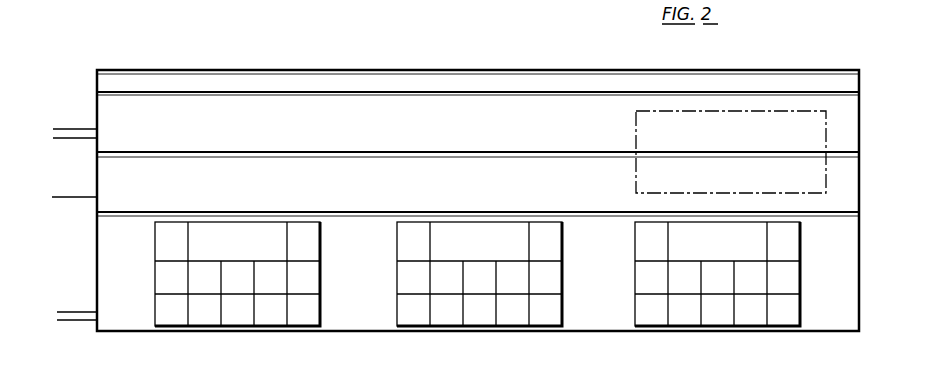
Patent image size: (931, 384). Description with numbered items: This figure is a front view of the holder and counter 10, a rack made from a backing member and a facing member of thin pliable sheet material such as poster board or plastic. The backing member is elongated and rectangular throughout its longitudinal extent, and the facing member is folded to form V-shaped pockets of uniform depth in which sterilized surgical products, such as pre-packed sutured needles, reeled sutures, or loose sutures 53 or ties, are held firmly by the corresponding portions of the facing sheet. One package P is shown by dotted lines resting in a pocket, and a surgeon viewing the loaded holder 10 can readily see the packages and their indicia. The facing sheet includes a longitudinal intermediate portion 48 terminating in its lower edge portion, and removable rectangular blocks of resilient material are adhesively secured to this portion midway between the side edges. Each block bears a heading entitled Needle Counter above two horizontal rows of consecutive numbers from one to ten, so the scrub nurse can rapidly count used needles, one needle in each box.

The holder and counter 10 is at (497, 298).
The longitudinal intermediate portion 48 is at (123, 315).
The loose sutures 53 is at (72, 129).
The package P is at (820, 126).